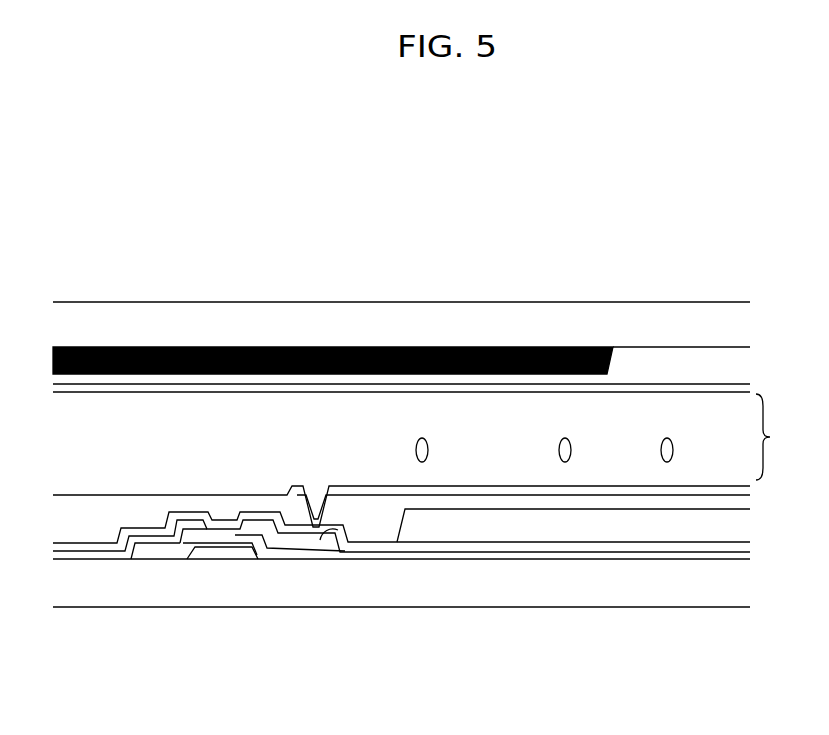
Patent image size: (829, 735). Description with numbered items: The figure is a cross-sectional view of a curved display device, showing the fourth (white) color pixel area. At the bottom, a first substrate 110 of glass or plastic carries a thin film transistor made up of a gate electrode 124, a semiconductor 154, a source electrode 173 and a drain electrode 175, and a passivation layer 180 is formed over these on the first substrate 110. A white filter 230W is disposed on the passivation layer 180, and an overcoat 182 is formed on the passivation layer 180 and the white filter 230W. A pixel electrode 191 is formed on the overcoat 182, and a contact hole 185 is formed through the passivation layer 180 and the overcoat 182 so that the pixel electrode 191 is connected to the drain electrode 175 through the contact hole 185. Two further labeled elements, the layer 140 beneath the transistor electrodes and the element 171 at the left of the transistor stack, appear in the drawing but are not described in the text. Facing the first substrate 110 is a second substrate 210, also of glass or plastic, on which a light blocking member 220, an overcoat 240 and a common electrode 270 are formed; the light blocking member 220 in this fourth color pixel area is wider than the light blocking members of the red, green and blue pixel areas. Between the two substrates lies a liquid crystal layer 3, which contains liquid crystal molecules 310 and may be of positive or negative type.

The liquid crystal layer 3 is at (772, 437).
The first substrate 110 is at (593, 585).
The gate electrode 124 is at (235, 553).
The gate insulating layer 140 is at (522, 557).
The semiconductor 154 is at (205, 535).
The data line 171 is at (140, 541).
The source electrode 173 is at (185, 533).
The drain electrode 175 is at (280, 540).
The passivation layer 180 is at (455, 548).
The overcoat 182 is at (388, 527).
The contact hole 185 is at (320, 540).
The pixel electrode 191 is at (350, 493).
The second substrate 210 is at (625, 320).
The light blocking member 220 is at (176, 346).
The white filter 230W is at (676, 527).
The overcoat 240 is at (697, 365).
The common electrode 270 is at (525, 388).
The liquid crystal molecules 310 is at (429, 450).